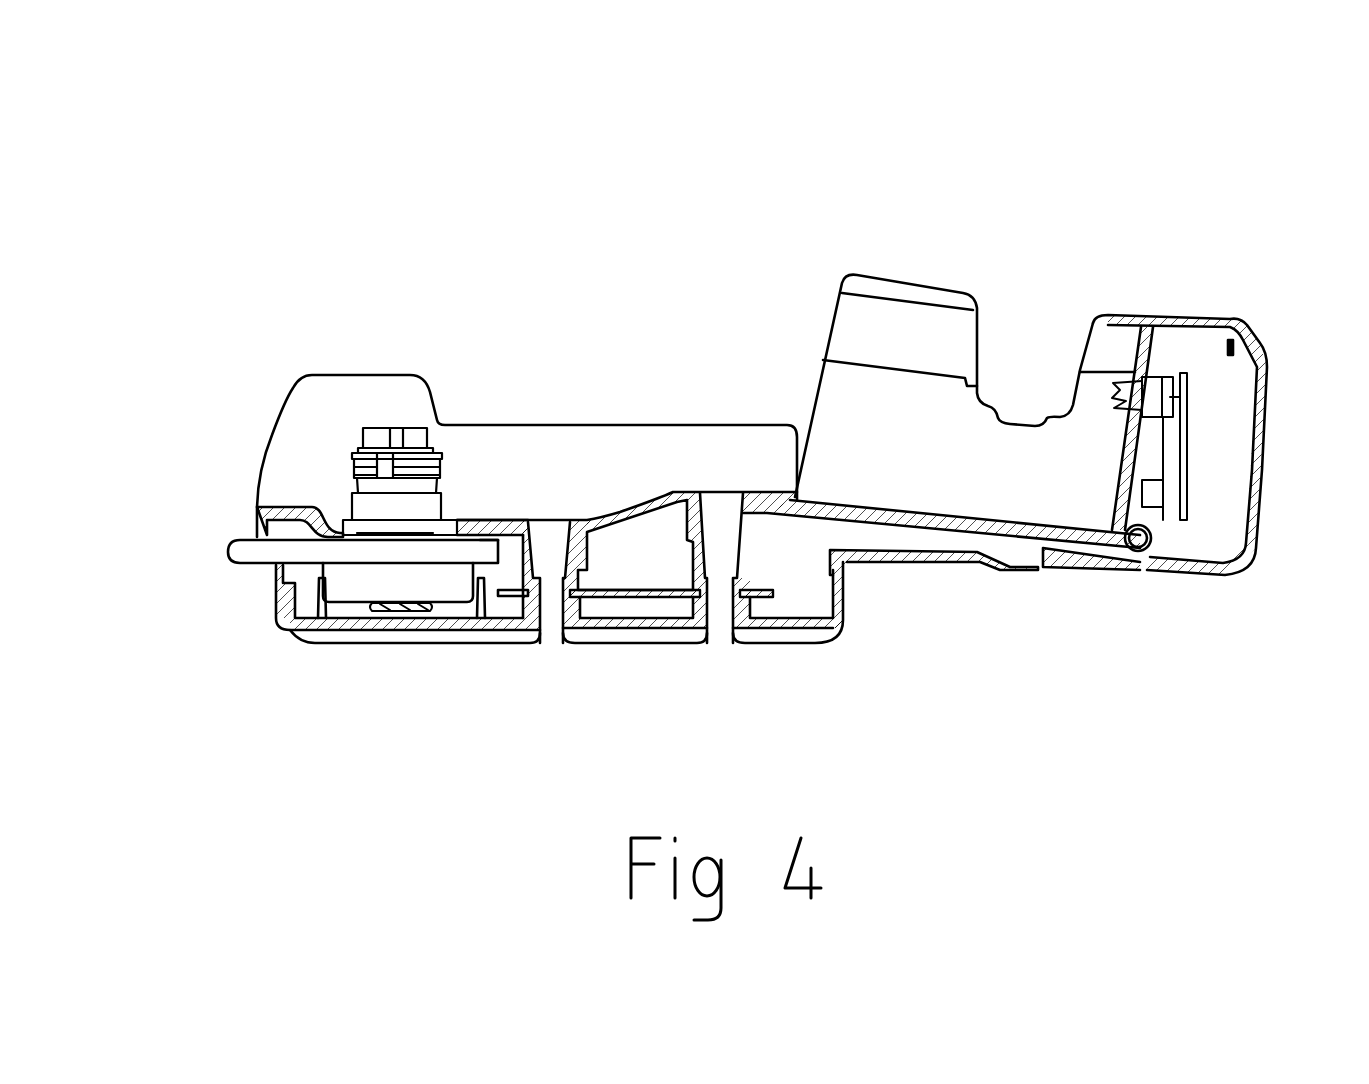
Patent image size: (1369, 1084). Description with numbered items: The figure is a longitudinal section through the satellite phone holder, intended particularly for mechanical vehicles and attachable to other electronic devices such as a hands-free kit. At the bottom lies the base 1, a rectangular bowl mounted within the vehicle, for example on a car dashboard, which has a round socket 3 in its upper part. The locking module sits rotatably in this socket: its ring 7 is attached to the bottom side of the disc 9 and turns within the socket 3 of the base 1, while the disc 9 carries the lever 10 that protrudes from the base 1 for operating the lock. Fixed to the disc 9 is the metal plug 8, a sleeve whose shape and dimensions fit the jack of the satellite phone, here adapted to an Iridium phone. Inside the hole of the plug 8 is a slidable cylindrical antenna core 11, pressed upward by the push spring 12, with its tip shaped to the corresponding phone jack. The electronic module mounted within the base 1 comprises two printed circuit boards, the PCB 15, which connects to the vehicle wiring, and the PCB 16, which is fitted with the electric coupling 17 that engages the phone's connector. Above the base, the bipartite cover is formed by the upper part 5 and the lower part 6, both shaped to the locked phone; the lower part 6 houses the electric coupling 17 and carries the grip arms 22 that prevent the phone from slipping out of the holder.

The base 1 is at (490, 637).
The round socket 3 is at (397, 578).
The upper part of the cover 5 is at (582, 452).
The lower part of the cover 6 is at (1143, 560).
The ring 7 is at (428, 605).
The metal plug 8 is at (433, 503).
The disc 9 is at (467, 550).
The lever 10 is at (232, 553).
The antenna core 11 is at (418, 436).
The push spring 12 is at (380, 603).
The PCB 15 is at (637, 593).
The PCB 16 is at (1177, 453).
The electric coupling 17 is at (1140, 378).
The grip arms 22 is at (900, 327).